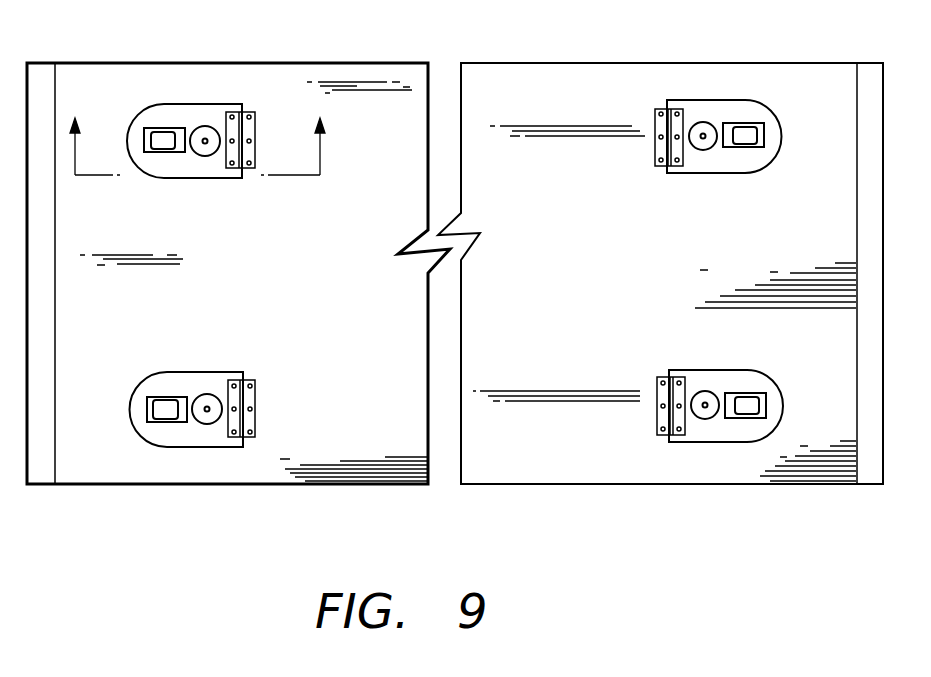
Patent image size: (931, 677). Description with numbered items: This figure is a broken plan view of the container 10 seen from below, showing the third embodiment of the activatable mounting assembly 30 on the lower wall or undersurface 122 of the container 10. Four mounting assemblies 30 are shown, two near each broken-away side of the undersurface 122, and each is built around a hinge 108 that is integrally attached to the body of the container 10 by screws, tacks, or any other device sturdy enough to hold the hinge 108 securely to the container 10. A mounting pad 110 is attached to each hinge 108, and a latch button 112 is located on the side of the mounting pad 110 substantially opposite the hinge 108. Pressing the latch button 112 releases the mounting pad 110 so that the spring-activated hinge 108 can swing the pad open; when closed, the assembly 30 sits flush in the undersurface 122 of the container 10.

The container 10 is at (306, 22).
The mounting assembly 30 is at (205, 180).
The hinge 108 is at (247, 170).
The mounting pad 110 is at (150, 438).
The latch button 112 is at (163, 138).
The undersurface 122 is at (384, 386).